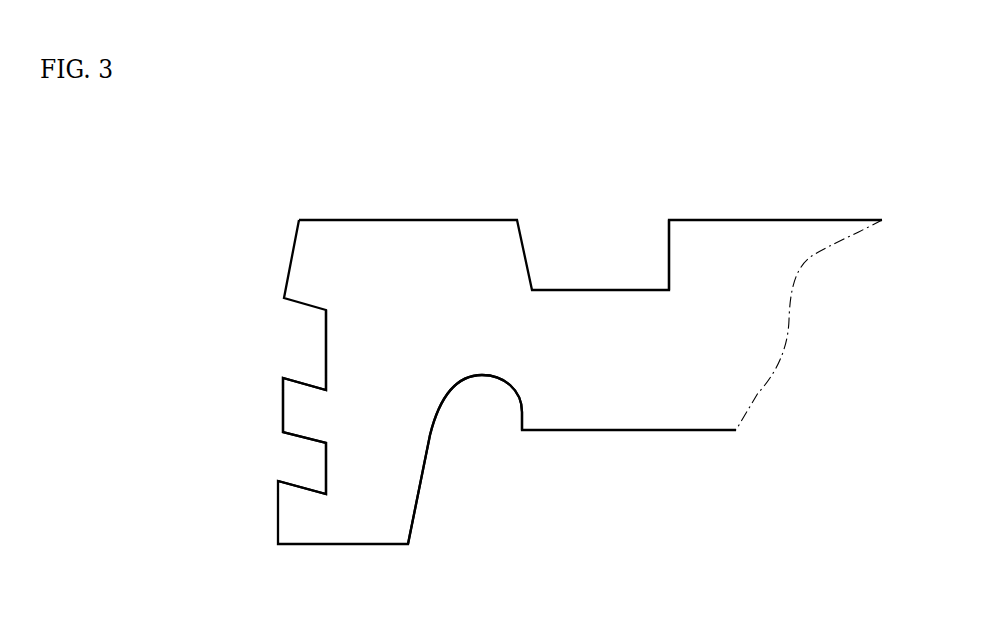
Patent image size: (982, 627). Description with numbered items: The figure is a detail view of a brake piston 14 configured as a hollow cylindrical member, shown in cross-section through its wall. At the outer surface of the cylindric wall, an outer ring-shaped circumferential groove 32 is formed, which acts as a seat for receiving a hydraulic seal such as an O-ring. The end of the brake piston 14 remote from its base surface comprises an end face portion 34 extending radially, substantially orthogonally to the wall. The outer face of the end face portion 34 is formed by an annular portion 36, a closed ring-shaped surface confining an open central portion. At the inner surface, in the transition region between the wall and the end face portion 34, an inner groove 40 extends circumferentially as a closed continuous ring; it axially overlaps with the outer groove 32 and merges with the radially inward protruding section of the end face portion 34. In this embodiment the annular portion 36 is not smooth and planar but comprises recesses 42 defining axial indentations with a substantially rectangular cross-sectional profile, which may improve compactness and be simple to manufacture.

The brake piston 14 is at (810, 247).
The outer ring-shaped circumferential groove 32 is at (653, 241).
The end face portion 34 is at (395, 525).
The annular portion 36 is at (263, 259).
The inner groove 40 is at (502, 415).
The recesses 42 is at (297, 455).